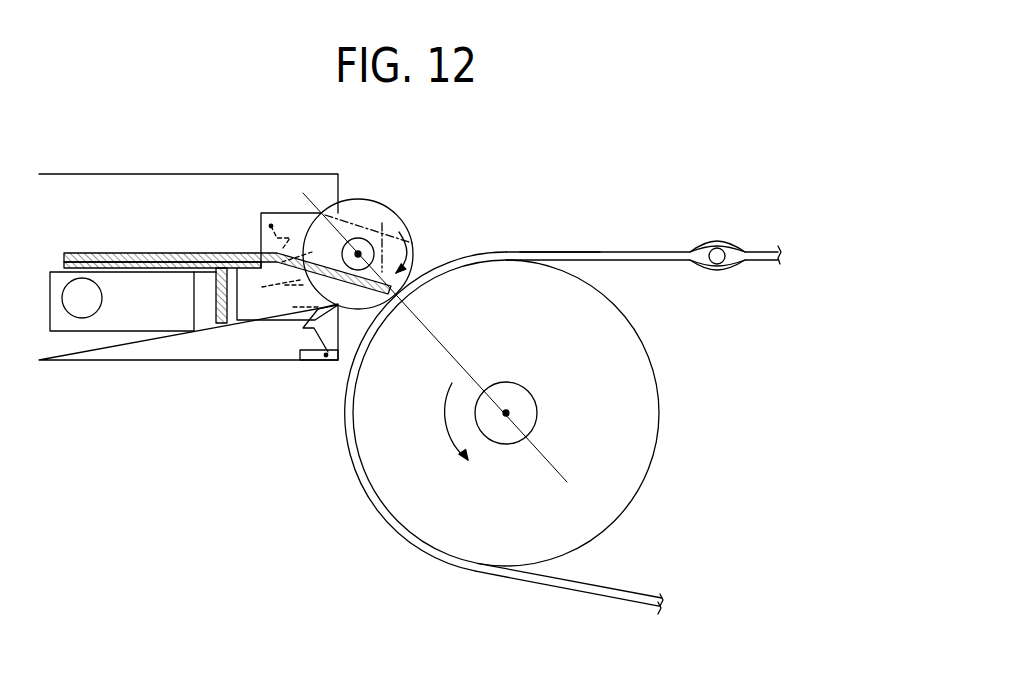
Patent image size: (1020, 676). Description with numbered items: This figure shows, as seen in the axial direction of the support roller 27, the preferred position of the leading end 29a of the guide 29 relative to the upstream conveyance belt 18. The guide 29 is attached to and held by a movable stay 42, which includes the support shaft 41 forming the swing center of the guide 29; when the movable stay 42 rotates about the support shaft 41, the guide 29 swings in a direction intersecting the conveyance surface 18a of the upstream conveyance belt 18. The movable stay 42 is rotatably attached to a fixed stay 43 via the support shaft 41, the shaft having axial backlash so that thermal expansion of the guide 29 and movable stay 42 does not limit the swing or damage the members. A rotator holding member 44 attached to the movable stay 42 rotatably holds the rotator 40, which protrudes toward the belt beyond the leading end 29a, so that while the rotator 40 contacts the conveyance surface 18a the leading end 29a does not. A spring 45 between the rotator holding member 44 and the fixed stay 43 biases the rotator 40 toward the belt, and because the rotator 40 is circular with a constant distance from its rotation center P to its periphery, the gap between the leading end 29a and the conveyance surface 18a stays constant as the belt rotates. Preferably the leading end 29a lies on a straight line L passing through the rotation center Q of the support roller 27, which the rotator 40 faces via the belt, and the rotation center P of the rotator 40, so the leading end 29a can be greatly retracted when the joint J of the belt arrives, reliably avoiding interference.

The upstream conveyance belt 18 is at (613, 252).
The conveyance surface 18a is at (507, 252).
The support roller 27 is at (443, 525).
The guide 29 is at (155, 253).
The leading end of the guide 29a is at (416, 246).
The rotator 40 is at (392, 214).
The support shaft 41 is at (82, 307).
The movable stay 42 is at (157, 332).
The fixed stay 43 is at (222, 324).
The rotator holding member 44 is at (292, 213).
The spring 45 is at (296, 305).
The rotation center of the rotator P is at (360, 252).
The rotation center of the support roller Q is at (502, 443).
The straight line L is at (440, 338).
The joint J is at (731, 228).